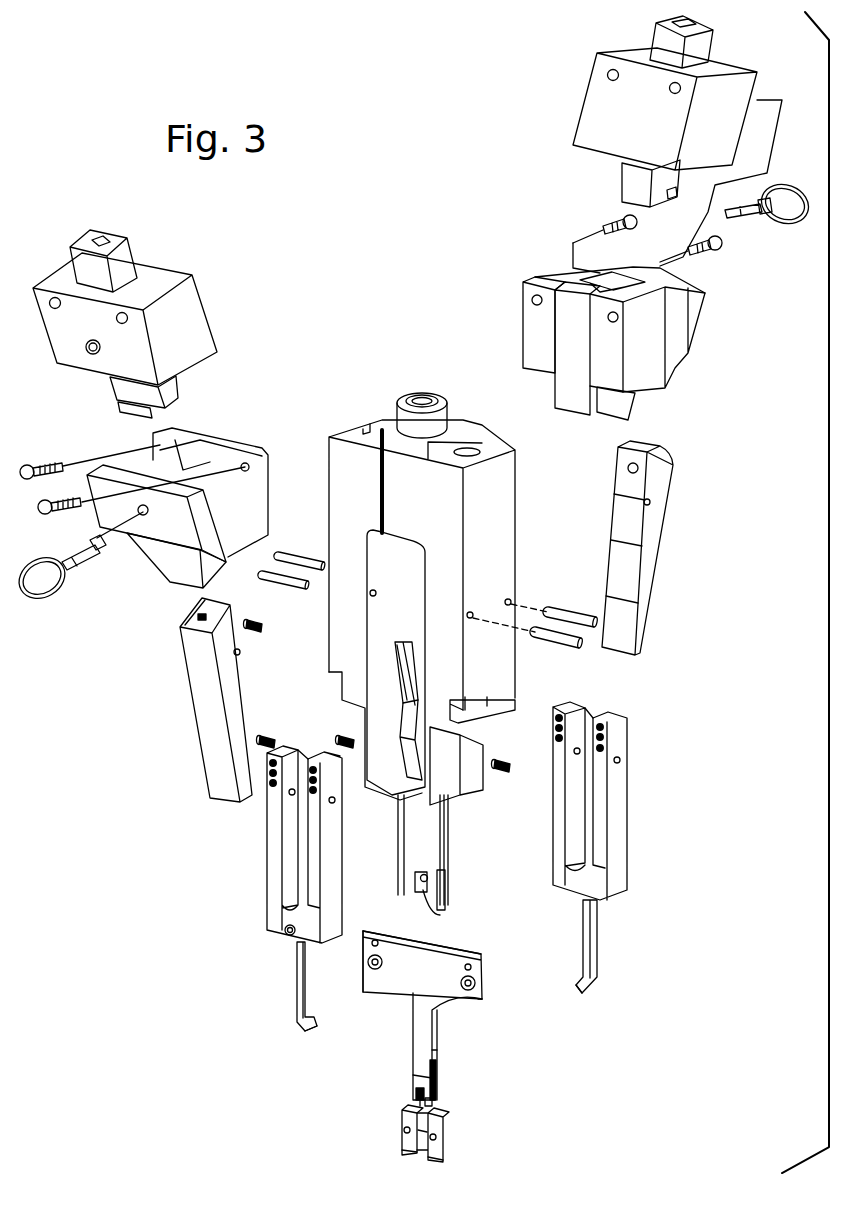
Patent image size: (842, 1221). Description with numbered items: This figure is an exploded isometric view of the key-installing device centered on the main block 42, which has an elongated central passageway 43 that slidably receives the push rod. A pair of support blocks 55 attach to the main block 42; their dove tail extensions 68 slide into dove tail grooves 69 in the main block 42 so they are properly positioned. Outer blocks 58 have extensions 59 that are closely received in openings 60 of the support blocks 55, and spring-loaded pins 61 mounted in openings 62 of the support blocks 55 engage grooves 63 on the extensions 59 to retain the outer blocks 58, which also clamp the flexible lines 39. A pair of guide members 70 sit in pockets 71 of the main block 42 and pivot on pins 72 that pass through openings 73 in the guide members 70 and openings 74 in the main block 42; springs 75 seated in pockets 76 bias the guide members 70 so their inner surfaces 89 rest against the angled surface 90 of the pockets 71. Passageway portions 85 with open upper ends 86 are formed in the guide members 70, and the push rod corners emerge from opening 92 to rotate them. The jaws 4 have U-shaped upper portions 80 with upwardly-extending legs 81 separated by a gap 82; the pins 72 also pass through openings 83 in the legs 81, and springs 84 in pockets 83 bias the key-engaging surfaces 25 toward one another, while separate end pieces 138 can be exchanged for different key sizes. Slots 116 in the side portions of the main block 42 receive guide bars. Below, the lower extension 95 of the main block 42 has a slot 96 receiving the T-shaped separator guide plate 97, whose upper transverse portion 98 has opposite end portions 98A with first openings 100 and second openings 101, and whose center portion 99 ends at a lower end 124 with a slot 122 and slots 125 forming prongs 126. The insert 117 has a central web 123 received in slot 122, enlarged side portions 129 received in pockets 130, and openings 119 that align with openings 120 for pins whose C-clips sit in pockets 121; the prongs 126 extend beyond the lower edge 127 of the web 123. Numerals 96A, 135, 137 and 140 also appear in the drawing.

The jaws 4 is at (450, 868).
The key-engaging surfaces 25 is at (306, 1032).
The flexible lines 39 is at (70, 253).
The main block 42 is at (516, 522).
The elongated central passageway 43 is at (437, 395).
The support blocks 55 is at (434, 344).
The outer blocks 58 is at (208, 312).
The extensions 59 is at (172, 392).
The openings 60 is at (175, 468).
The spring-loaded pins 61 is at (88, 558).
The openings 62 is at (146, 517).
The grooves 63 is at (118, 404).
The dove tail extensions 68 is at (570, 312).
The dove tail grooves 69 is at (394, 437).
The guide members 70 is at (411, 603).
The pockets 71 is at (392, 575).
The pins 72 is at (300, 557).
The openings 73 is at (242, 655).
The openings 74 is at (370, 596).
The springs 75 is at (256, 630).
The pockets 76 is at (637, 464).
The U-shaped upper portions 80 is at (267, 839).
The upwardly-extending legs 81 is at (267, 811).
The gap 82 is at (303, 762).
The openings 83 is at (292, 795).
The springs 84 is at (261, 737).
The portions 85 is at (195, 622).
The open upper ends 86 is at (198, 617).
The inner surfaces 89 is at (614, 572).
The angled surface 90 is at (400, 664).
The opening 92 is at (412, 640).
The lower extension 95 is at (447, 848).
The slot 96 is at (446, 860).
The block 96A is at (458, 768).
The separator guide plate 97 is at (484, 956).
The upper transverse portion 98 is at (435, 1004).
The opposite end portions 98A is at (380, 929).
The center portion 99 is at (438, 1050).
The first openings 100 is at (372, 969).
The second openings 101 is at (370, 943).
The slots 116 is at (341, 690).
The insert 117 is at (423, 1147).
The openings 119 is at (428, 1138).
The openings 120 is at (430, 878).
The pockets 121 is at (430, 897).
The slot 122 is at (438, 1068).
The central web 123 is at (430, 1113).
The lower end 124 is at (417, 1075).
The slots 125 is at (414, 1091).
The prongs 126 is at (418, 1104).
The lower edge 127 is at (421, 1152).
The enlarged side portions 129 is at (406, 1154).
The pockets 130 is at (446, 906).
The rod 135 is at (400, 862).
The stem 137 is at (420, 996).
The end pieces 138 is at (299, 1019).
The plate edge 140 is at (440, 946).